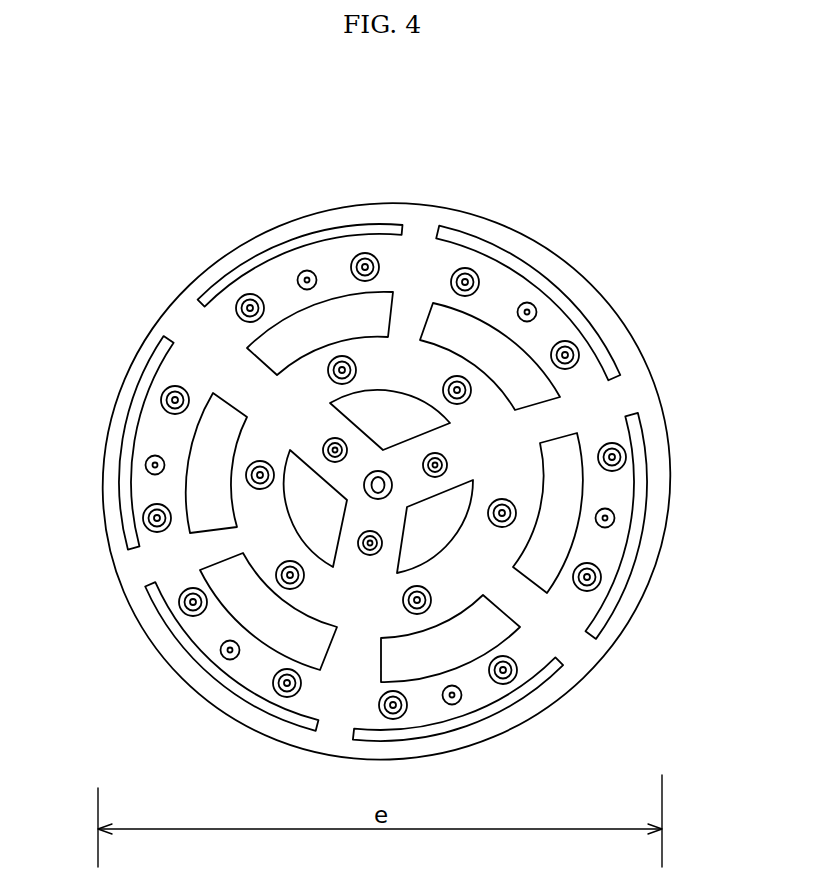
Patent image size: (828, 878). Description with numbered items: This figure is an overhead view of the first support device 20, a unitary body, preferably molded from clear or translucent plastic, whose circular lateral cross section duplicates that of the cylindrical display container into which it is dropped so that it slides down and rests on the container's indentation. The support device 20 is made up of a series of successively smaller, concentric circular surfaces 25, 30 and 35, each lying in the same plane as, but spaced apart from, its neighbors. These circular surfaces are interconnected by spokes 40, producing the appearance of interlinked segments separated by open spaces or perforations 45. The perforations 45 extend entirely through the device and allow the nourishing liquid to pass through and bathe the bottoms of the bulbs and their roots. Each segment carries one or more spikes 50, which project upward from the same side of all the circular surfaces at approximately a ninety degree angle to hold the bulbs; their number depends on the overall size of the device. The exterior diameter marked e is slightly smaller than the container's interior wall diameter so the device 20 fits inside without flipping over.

The first support device 20 is at (585, 207).
The circular surface 25 is at (652, 541).
The circular surface 30 is at (603, 552).
The circular surface 35 is at (327, 503).
The spokes 40 is at (407, 310).
The perforations 45 is at (288, 255).
The spikes 50 is at (170, 394).